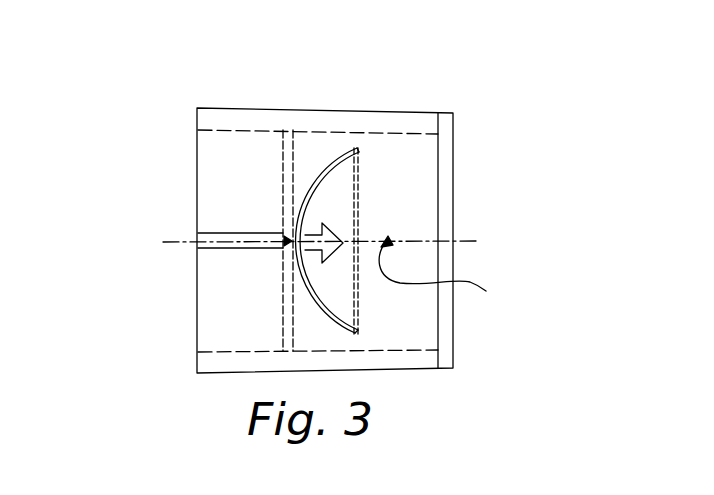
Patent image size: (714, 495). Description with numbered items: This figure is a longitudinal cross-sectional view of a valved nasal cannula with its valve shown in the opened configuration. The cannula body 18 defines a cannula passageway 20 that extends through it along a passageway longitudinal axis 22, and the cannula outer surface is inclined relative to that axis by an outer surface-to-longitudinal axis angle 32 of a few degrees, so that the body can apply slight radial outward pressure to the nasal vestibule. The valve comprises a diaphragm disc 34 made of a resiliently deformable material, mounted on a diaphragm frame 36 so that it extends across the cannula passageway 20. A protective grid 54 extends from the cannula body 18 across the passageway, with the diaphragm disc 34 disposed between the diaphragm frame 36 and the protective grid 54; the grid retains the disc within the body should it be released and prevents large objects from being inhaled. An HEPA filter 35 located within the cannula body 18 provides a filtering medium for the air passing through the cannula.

The cannula body 18 is at (403, 110).
The cannula passageway 20 is at (425, 177).
The passageway longitudinal axis 22 is at (172, 246).
The outer surface-to-longitudinal axis angle 32 is at (463, 276).
The diaphragm disc 34 is at (345, 150).
The HEPA filter 35 is at (230, 315).
The diaphragm frame 36 is at (282, 142).
The protective grid 54 is at (453, 135).